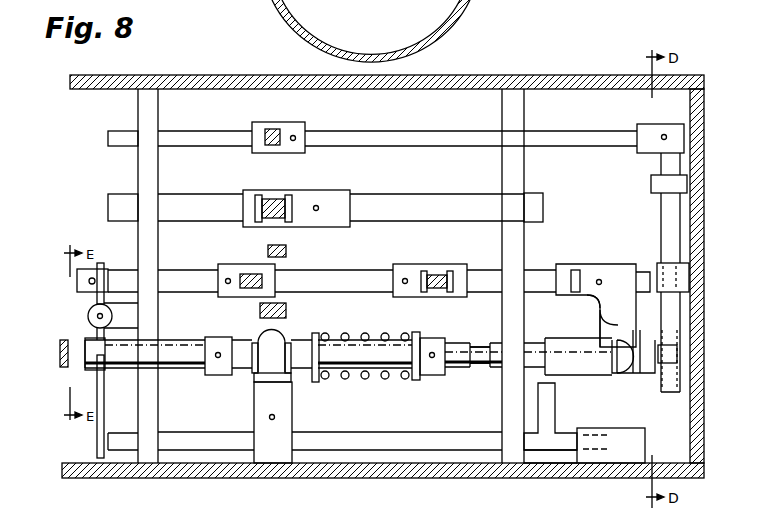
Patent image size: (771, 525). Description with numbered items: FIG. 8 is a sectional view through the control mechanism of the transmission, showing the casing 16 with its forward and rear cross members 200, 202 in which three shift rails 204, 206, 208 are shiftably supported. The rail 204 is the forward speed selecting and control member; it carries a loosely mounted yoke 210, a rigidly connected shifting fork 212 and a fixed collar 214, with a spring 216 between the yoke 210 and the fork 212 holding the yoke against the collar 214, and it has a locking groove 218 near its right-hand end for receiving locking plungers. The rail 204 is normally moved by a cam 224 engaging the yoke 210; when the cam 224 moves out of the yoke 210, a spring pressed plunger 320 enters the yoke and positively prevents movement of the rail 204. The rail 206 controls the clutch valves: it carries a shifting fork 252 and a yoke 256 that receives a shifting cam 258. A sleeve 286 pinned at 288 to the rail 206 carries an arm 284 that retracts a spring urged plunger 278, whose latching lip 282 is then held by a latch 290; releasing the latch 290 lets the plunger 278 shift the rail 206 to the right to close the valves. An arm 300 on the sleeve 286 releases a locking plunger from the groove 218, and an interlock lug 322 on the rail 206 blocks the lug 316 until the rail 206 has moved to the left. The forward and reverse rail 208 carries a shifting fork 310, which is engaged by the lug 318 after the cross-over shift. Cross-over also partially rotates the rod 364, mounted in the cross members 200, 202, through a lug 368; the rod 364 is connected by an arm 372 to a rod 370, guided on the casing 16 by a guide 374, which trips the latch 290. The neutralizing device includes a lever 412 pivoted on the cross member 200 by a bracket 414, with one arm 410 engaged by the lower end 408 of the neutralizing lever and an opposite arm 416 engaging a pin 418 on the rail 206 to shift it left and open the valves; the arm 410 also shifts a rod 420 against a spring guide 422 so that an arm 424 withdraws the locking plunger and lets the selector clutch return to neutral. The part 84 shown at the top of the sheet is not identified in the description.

The casing 16 is at (478, 75).
The drum 84 is at (388, 4).
The forward cross member 200 is at (158, 418).
The rear cross member 202 is at (504, 413).
The shift rail 204 is at (166, 345).
The valve shifting rail 206 is at (196, 287).
The forward and reverse rail 208 is at (384, 200).
The yoke 210 is at (316, 383).
The shifting fork 212 is at (430, 378).
The collar 214 is at (220, 378).
The spring 216 is at (362, 380).
The locking groove 218 is at (480, 370).
The cam 224 is at (286, 311).
The shifting fork 252 is at (430, 265).
The yoke 256 is at (418, 294).
The shifting cam 258 is at (440, 293).
The spring urged plunger 278 is at (616, 355).
The latching lip 282 is at (640, 375).
The arm 284 is at (636, 320).
The sleeve 286 is at (608, 266).
The pin 288 is at (597, 286).
The latch 290 is at (660, 340).
The arm 300 is at (578, 268).
The shifting fork 310 is at (312, 191).
The lug 316 is at (286, 249).
The lug 318 is at (270, 198).
The spring pressed plunger 320 is at (276, 380).
The interlock lug 322 is at (275, 282).
The rod 364 is at (405, 136).
The lug 368 is at (274, 130).
The rod 370 is at (661, 216).
The arm 372 is at (658, 163).
The guide 374 is at (688, 268).
The lower end 408 is at (59, 356).
The arm 410 is at (96, 381).
The lever 412 is at (88, 317).
The bracket 414 is at (117, 321).
The arm 416 is at (104, 266).
The pin 418 is at (89, 283).
The rod 420 is at (400, 436).
The spring guide 422 is at (612, 434).
The arm 424 is at (551, 423).